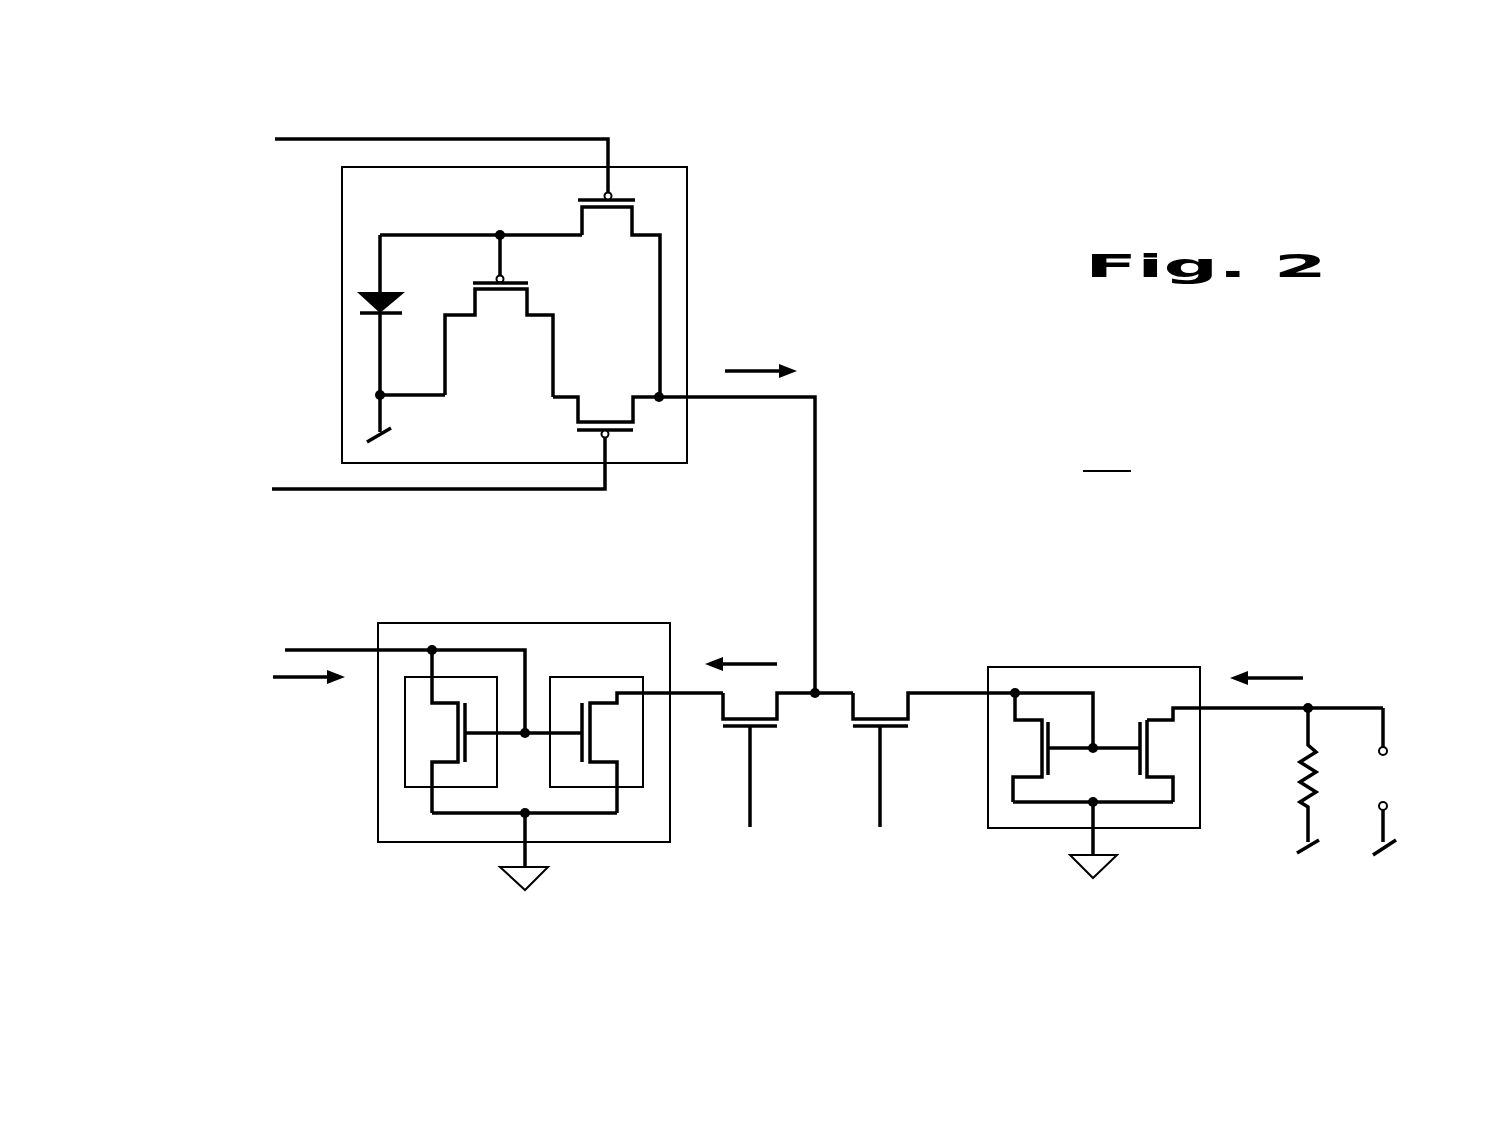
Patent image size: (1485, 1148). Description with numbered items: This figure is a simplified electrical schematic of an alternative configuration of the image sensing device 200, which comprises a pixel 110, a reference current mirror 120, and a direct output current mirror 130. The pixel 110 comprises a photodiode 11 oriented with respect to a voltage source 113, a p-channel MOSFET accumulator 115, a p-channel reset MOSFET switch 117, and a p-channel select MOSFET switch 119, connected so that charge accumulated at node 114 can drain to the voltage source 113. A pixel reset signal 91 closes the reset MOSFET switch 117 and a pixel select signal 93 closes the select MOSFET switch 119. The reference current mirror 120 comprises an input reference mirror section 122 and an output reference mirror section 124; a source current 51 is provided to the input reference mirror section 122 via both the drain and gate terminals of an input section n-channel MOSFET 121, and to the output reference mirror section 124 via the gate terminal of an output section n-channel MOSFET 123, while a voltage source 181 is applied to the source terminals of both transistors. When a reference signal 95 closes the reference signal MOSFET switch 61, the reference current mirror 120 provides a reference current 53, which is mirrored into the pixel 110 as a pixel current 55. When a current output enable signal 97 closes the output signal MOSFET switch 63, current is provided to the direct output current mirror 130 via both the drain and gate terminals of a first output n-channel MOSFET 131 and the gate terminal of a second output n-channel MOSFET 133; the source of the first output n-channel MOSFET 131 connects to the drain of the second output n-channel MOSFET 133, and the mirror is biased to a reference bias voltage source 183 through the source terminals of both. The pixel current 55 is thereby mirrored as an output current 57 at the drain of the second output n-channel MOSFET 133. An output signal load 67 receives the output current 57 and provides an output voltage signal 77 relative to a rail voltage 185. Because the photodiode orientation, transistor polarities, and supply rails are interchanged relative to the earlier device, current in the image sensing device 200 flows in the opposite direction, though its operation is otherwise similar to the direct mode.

The image sensing device 200 is at (1107, 456).
The pixel 110 is at (687, 167).
The pixel reset signal 91 is at (240, 160).
The pixel select signal 93 is at (232, 468).
The photodiode 11 is at (370, 290).
The node 114 is at (500, 232).
The p-channel reset MOSFET switch 117 is at (635, 218).
The p-channel MOSFET accumulator 115 is at (530, 300).
The p-channel select MOSFET switch 119 is at (636, 410).
The voltage source 113 is at (372, 440).
The pixel current 55 is at (750, 370).
The source current 51 is at (308, 680).
The reference current mirror 120 is at (378, 842).
The input section n-channel MOSFET 121 is at (445, 703).
The input reference mirror section 122 is at (478, 677).
The output section n-channel MOSFET 123 is at (600, 703).
The output reference mirror section 124 is at (630, 787).
The voltage source 181 is at (510, 882).
The reference current 53 is at (750, 660).
The reference signal MOSFET switch 61 is at (778, 705).
The reference signal 95 is at (748, 877).
The output signal MOSFET switch 63 is at (908, 705).
The current output enable signal 97 is at (878, 877).
The direct output current mirror 130 is at (1150, 828).
The first output n-channel MOSFET 131 is at (1030, 720).
The second output n-channel MOSFET 133 is at (1160, 720).
The reference bias voltage source 183 is at (1080, 872).
The output current 57 is at (1278, 678).
The output signal load 67 is at (1300, 782).
The output voltage signal 77 is at (1418, 752).
The rail voltage 185 is at (1375, 855).